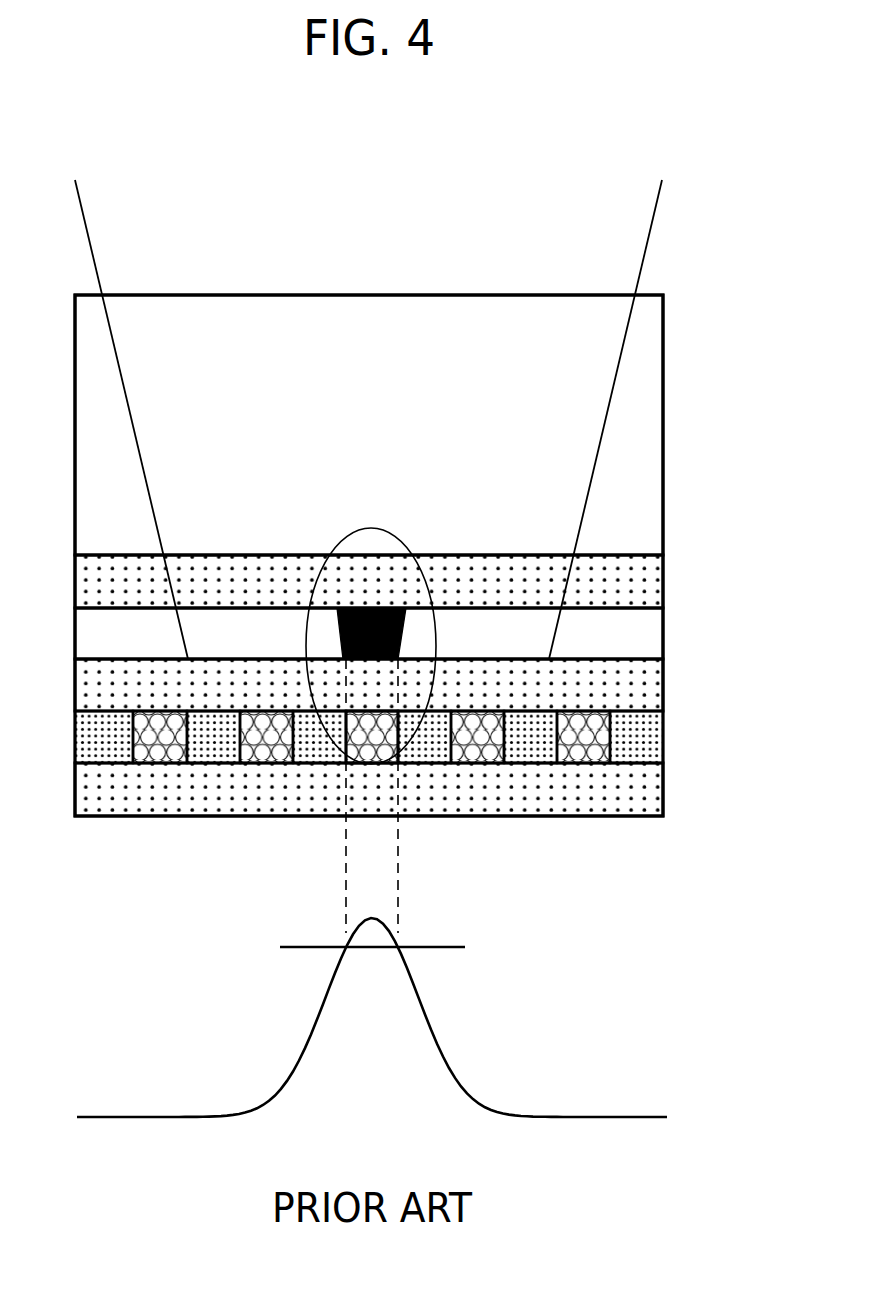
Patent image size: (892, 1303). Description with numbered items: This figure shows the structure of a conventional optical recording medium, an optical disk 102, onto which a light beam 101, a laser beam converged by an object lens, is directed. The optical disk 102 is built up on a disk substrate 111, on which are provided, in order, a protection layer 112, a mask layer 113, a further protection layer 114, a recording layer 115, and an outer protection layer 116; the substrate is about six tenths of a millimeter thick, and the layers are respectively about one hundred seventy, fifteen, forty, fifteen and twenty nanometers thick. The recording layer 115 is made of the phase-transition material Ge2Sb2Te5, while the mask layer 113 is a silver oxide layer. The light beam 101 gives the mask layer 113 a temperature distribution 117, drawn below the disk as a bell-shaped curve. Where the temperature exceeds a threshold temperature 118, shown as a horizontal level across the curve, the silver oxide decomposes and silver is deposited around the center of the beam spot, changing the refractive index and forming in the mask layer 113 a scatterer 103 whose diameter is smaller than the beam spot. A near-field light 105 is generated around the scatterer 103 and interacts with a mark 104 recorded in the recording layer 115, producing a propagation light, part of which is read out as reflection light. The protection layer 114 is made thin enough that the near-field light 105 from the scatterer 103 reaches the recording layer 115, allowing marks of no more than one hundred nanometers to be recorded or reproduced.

The light beam 101 is at (652, 231).
The optical disk 102 is at (722, 364).
The scatterer 103 is at (352, 607).
The mark 104 is at (370, 750).
The near-field light 105 is at (395, 533).
The disk substrate 111 is at (663, 431).
The protection layer 112 is at (663, 580).
The mask layer 113 is at (663, 631).
The protection layer 114 is at (663, 683).
The recording layer 115 is at (663, 735).
The protection layer 116 is at (663, 787).
The temperature distribution 117 is at (432, 1043).
The threshold temperature 118 is at (438, 945).